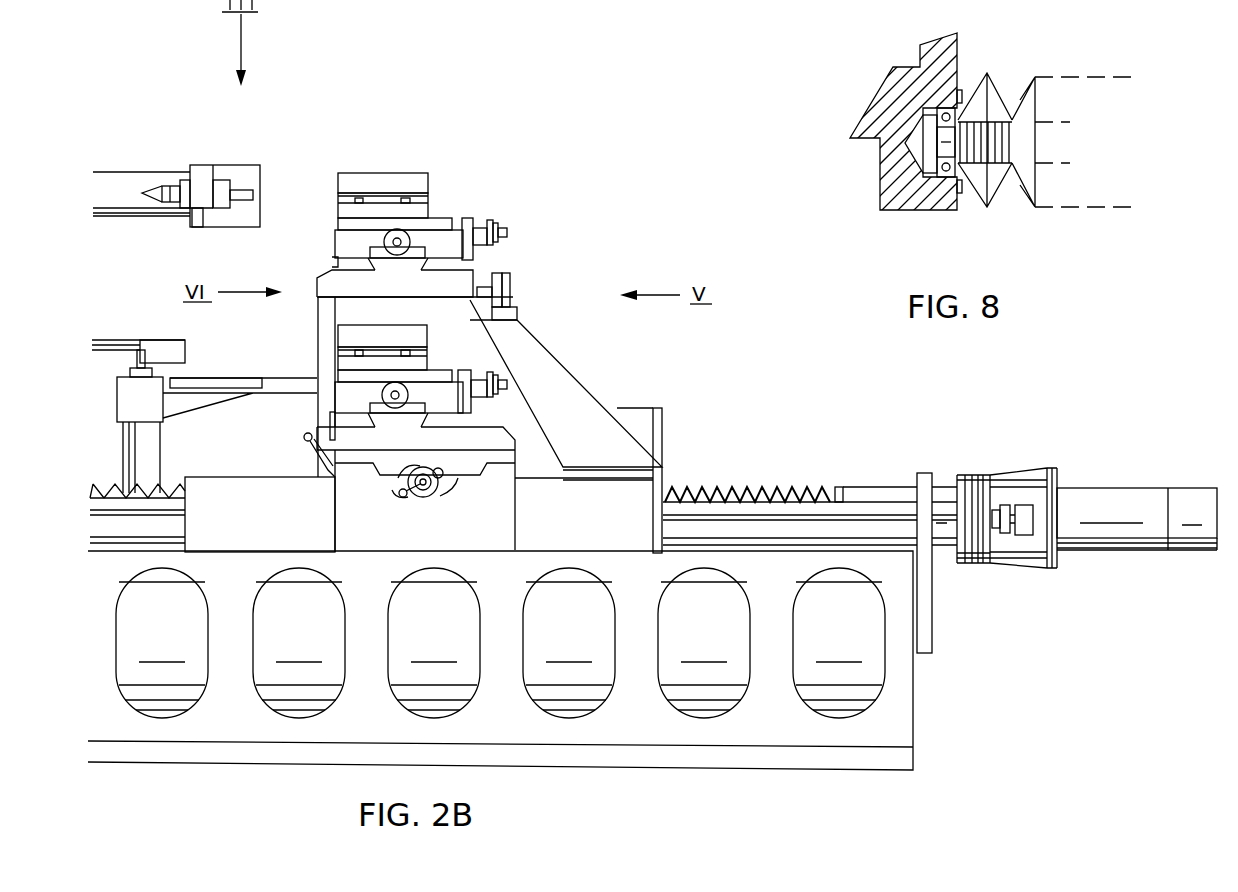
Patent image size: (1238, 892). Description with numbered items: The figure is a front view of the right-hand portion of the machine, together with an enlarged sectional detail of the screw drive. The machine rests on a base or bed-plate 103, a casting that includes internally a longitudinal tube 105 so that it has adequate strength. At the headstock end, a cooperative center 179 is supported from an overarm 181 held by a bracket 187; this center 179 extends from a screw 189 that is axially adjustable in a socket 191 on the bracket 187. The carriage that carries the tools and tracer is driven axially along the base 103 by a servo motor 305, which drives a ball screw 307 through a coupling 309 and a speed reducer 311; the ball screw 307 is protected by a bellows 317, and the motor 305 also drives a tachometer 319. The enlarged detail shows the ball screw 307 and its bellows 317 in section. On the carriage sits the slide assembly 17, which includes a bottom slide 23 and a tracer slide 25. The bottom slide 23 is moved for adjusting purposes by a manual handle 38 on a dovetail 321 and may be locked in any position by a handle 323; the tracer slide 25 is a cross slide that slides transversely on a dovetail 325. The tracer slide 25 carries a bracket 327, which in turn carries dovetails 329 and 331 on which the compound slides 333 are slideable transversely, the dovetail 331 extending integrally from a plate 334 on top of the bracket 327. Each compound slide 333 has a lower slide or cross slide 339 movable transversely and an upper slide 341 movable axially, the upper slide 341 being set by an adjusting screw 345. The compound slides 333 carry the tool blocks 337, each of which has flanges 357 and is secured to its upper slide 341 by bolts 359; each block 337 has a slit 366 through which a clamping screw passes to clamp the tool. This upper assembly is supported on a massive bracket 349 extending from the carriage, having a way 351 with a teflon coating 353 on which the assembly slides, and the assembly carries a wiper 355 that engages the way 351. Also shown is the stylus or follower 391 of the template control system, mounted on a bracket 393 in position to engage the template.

In FIG. 2B, the slide assembly 17 is at (480, 361).
In FIG. 2B, the bottom slide 23 is at (345, 460).
In FIG. 2B, the tracer slide 25 is at (330, 425).
In FIG. 2B, the manual handle 38 is at (401, 496).
In FIG. 2B, the base or bed-plate 103 is at (895, 707).
In FIG. 2B, the longitudinal tube 105 is at (826, 603).
In FIG. 2B, the cooperative center 179 is at (152, 188).
In FIG. 2B, the overarm 181 is at (137, 216).
In FIG. 2B, the bracket 187 is at (241, 175).
In FIG. 2B, the screw 189 is at (216, 182).
In FIG. 2B, the socket 191 is at (198, 220).
In FIG. 2B, the servo motor 305 is at (1130, 496).
In FIG. 8, the ball screw 307 is at (1000, 118).
In FIG. 2B, the coupling 309 is at (1010, 505).
In FIG. 2B, the speed reducer 311 is at (978, 477).
In FIG. 2B, the bellows 317 is at (748, 488).
In FIG. 8, the bellows 317 is at (1000, 200).
In FIG. 2B, the tachometer 319 is at (1207, 490).
In FIG. 2B, the dovetail 321 is at (470, 468).
In FIG. 2B, the handle 323 is at (304, 447).
In FIG. 2B, the dovetail 325 is at (415, 458).
In FIG. 2B, the bracket 327 is at (326, 332).
In FIG. 2B, the dovetail 329 is at (408, 418).
In FIG. 2B, the dovetail 331 is at (408, 263).
In FIG. 2B, the compound slides 333 is at (330, 225).
In FIG. 2B, the plate 334 is at (330, 265).
In FIG. 2B, the tool blocks 337 is at (385, 182).
In FIG. 2B, the lower slide or cross slide 339 is at (342, 240).
In FIG. 2B, the upper slide 341 is at (433, 227).
In FIG. 2B, the adjusting screw 345 is at (507, 227).
In FIG. 2B, the bracket 349 is at (580, 373).
In FIG. 2B, the way 351 is at (505, 295).
In FIG. 2B, the coating 353 is at (500, 283).
In FIG. 2B, the wiper 355 is at (512, 303).
In FIG. 2B, the flanges 357 is at (415, 215).
In FIG. 2B, the bolts 359 is at (362, 196).
In FIG. 2B, the slit 366 is at (418, 192).
In FIG. 2B, the stylus or follower 391 is at (150, 455).
In FIG. 2B, the bracket 393 is at (232, 378).